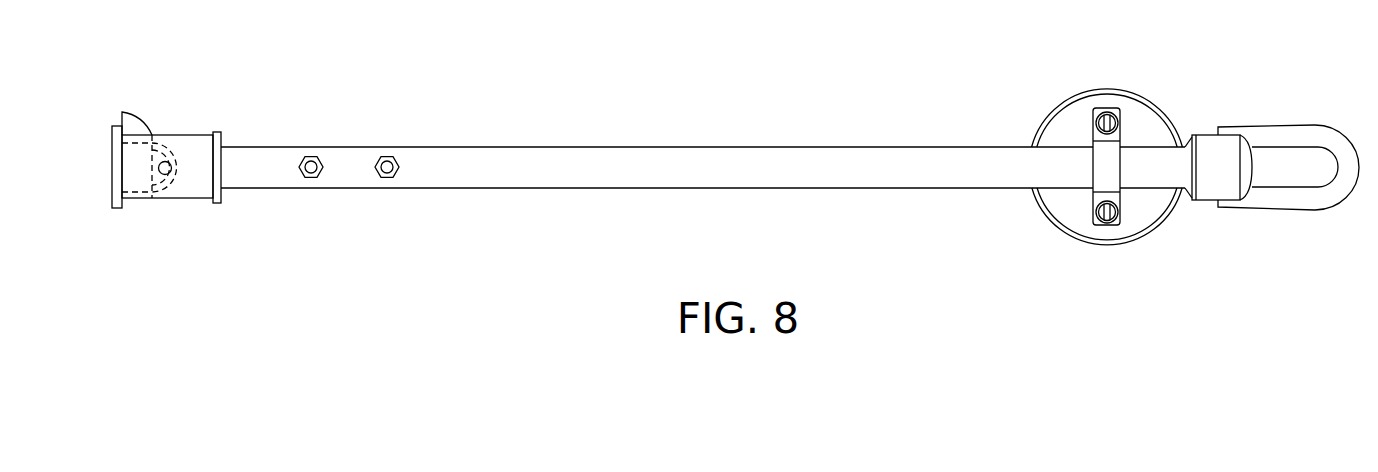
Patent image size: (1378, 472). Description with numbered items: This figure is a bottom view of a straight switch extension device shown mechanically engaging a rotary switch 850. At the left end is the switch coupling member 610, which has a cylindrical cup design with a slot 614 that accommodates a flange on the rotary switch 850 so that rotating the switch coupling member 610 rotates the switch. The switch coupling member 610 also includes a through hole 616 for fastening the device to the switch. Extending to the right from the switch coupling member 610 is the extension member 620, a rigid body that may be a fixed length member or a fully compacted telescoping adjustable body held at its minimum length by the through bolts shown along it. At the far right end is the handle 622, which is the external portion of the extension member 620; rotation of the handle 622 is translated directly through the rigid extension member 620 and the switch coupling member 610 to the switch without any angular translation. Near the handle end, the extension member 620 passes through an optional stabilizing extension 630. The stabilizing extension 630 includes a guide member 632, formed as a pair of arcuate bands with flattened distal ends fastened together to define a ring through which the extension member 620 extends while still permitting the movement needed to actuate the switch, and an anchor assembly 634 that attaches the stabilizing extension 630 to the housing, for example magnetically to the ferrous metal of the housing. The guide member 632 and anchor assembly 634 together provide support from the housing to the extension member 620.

The switch coupling member 610 is at (205, 132).
The slot 614 is at (152, 135).
The through hole 616 is at (165, 168).
The extension member 620 is at (738, 182).
The handle 622 is at (1313, 212).
The stabilizing extension 630 is at (1073, 95).
The guide member 632 is at (1120, 112).
The anchor assembly 634 is at (1153, 213).
The rotary switch 850 is at (137, 188).